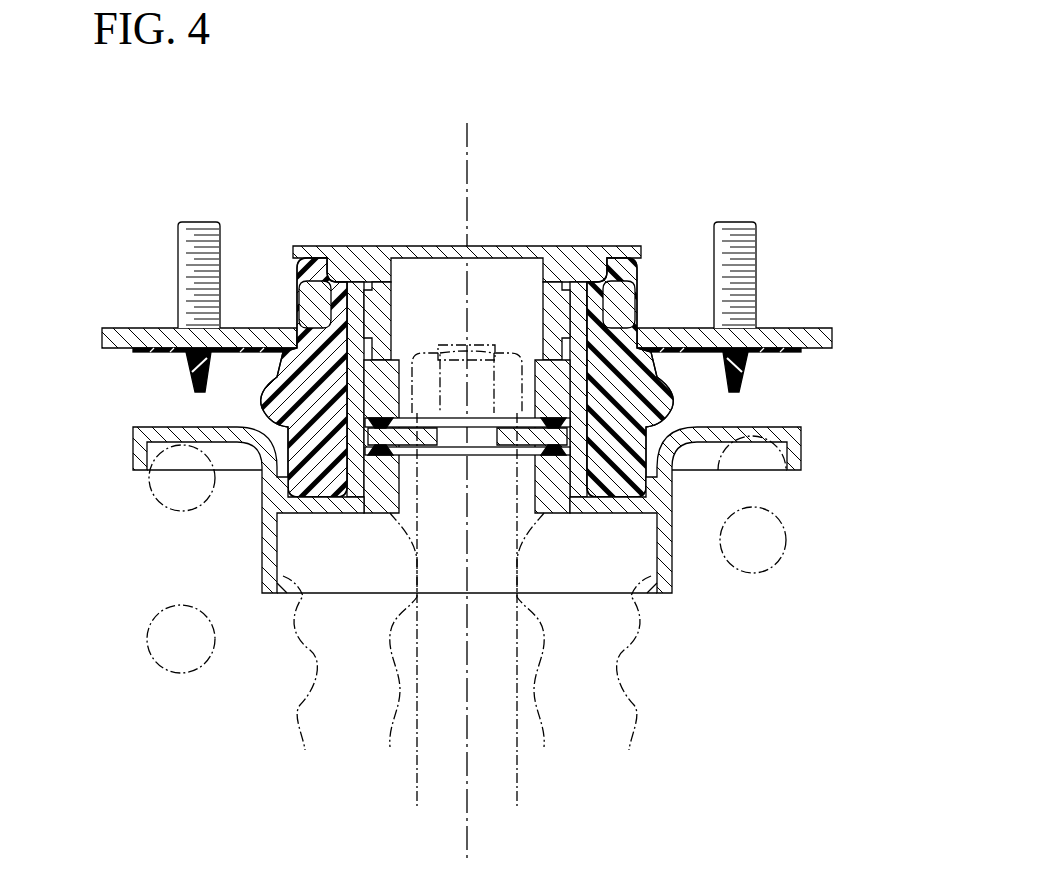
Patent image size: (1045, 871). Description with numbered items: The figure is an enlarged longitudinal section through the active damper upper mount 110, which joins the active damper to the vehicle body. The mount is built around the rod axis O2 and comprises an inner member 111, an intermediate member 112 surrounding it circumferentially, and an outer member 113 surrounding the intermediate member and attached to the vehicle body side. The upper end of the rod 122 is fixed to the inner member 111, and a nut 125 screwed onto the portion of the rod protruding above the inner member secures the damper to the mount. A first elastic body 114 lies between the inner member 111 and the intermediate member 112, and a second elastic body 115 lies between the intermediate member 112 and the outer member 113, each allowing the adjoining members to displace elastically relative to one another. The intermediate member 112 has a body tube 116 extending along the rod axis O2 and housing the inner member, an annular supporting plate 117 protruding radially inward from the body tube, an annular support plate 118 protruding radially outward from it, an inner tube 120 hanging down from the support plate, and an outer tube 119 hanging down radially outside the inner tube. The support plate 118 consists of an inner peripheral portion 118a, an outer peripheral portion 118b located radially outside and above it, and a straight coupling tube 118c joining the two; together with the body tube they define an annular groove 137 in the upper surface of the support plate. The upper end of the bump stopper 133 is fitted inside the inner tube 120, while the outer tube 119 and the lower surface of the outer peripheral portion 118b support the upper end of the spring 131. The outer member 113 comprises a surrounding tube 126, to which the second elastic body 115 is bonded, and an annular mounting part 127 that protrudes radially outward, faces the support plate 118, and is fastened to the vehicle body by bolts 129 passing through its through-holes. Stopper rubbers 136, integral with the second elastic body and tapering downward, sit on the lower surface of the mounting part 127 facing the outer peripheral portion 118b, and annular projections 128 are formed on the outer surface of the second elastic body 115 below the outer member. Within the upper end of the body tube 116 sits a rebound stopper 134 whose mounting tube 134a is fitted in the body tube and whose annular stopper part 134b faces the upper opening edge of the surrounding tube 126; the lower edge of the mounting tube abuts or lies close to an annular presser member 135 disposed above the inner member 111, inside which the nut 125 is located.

The rod axis O2 is at (468, 158).
The active damper upper mount 110 is at (640, 245).
The inner member 111 is at (550, 513).
The intermediate member 112 is at (802, 428).
The outer member 113 is at (522, 420).
The first elastic body 114 is at (385, 455).
The second elastic body 115 is at (272, 462).
The body tube 116 is at (540, 288).
The annular supporting plate 117 is at (504, 447).
The annular support plate 118 is at (522, 432).
The inner peripheral portion 118a is at (660, 580).
The outer peripheral portion 118b is at (680, 475).
The coupling tube 118c is at (655, 515).
The outer tube 119 is at (802, 447).
The inner tube 120 is at (665, 585).
The rod 122 is at (417, 780).
The nut 125 is at (508, 362).
The surrounding tube 126 is at (299, 305).
The annular mounting part 127 is at (140, 328).
The annular projections 128 is at (258, 395).
The bolts 129 is at (180, 233).
The spring 131 is at (147, 640).
The bump stopper 133 is at (307, 740).
The rebound stopper 134 is at (522, 347).
The mounting tube 134a is at (390, 288).
The annular stopper part 134b is at (427, 146).
The annular presser member 135 is at (397, 362).
The stopper rubber 136 is at (190, 366).
The annular groove 137 is at (663, 432).